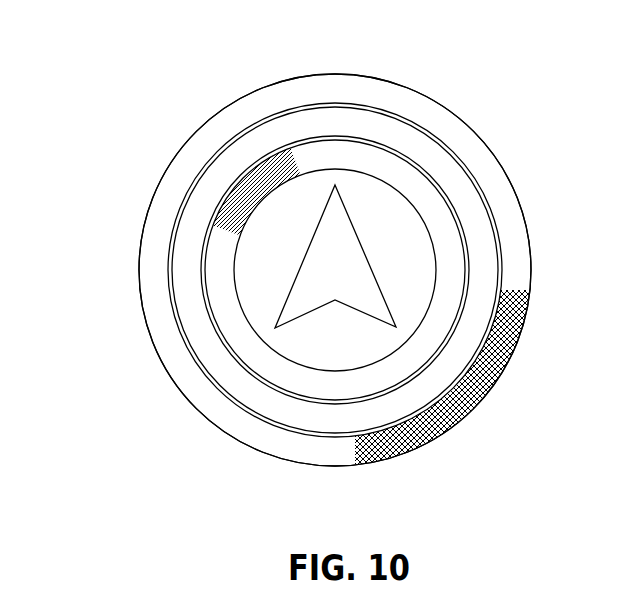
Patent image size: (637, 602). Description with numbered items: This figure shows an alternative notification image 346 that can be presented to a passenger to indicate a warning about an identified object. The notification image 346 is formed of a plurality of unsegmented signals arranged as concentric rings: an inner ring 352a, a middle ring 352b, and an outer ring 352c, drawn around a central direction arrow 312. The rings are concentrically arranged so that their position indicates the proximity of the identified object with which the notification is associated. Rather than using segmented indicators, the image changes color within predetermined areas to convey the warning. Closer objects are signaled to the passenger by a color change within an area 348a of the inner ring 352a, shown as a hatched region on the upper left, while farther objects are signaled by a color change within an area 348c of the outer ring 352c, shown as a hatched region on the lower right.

The notification image 346 is at (129, 350).
The inner ring 352a is at (220, 288).
The middle ring 352b is at (257, 140).
The outer ring 352c is at (331, 92).
The area of inner ring 348a is at (225, 200).
The area of outer ring 348c is at (480, 370).
The direction arrow 312 is at (325, 250).